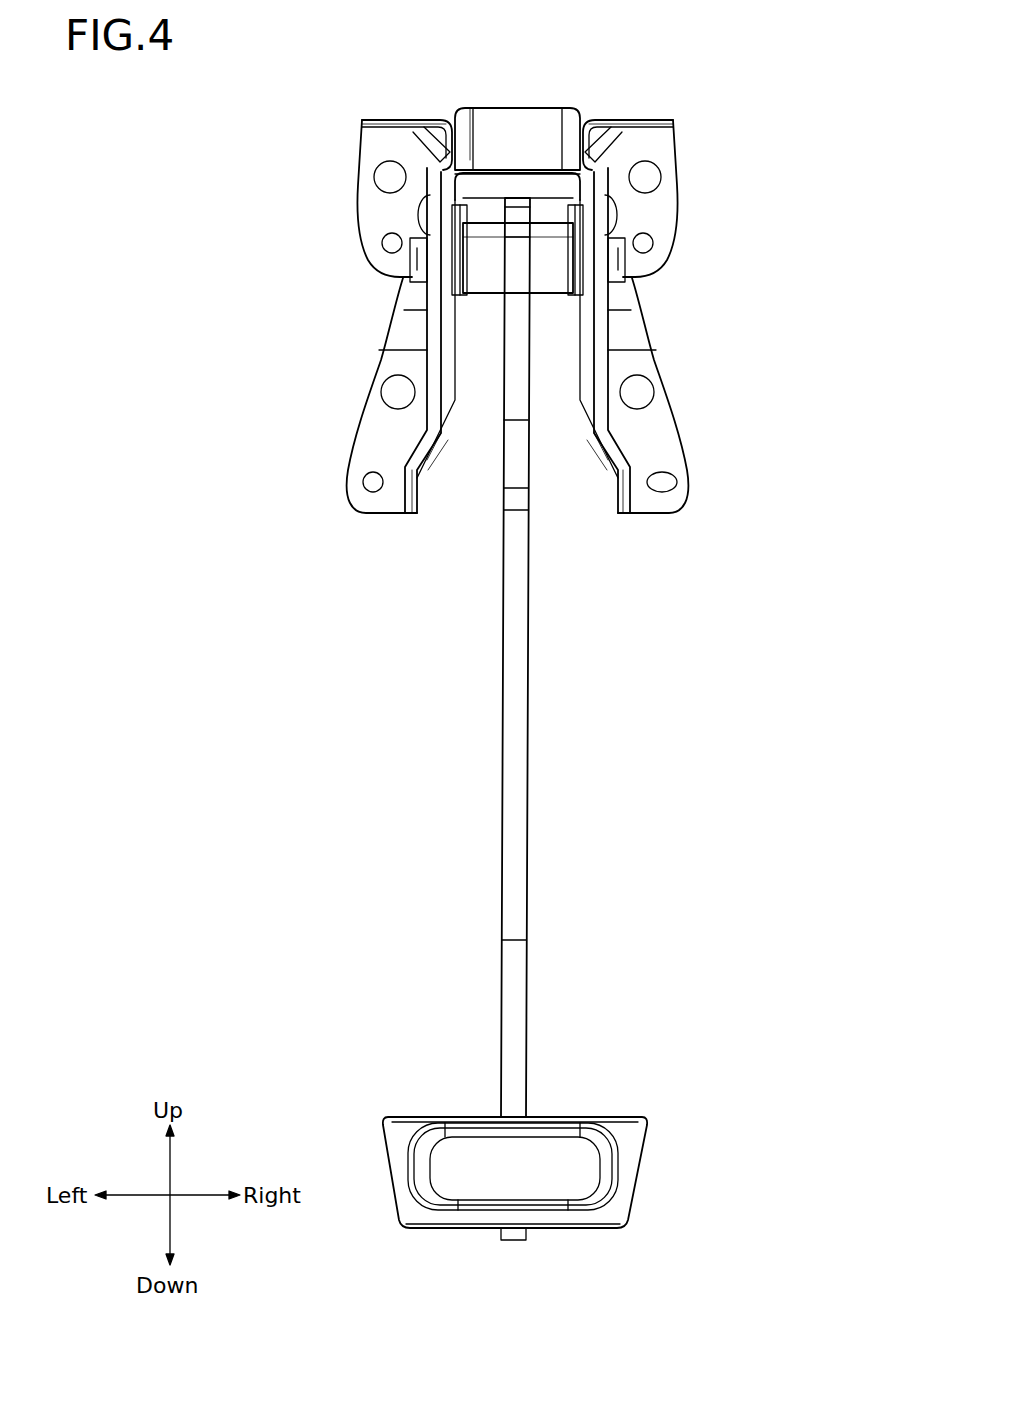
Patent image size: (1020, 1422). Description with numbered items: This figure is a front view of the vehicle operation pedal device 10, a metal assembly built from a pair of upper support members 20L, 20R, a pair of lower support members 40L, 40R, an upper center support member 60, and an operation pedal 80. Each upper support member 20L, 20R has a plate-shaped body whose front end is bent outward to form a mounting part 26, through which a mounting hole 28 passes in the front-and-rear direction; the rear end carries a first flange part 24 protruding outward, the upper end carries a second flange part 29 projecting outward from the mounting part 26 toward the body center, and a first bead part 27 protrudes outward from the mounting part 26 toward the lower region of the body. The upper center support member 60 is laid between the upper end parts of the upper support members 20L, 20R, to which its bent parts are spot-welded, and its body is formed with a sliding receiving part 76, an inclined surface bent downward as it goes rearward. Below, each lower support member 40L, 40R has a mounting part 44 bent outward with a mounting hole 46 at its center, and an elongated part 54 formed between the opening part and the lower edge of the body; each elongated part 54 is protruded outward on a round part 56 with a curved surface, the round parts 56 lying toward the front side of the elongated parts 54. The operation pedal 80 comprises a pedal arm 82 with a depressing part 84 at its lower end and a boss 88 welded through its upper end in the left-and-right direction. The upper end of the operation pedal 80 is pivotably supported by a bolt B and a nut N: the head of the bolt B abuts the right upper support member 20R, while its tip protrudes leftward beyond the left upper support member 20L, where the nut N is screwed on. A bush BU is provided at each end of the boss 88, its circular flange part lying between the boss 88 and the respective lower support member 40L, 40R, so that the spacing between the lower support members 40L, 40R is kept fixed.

The vehicle operation pedal device 10 is at (786, 64).
The upper support member 20L is at (355, 134).
The upper support member 20R is at (681, 133).
The first flange part 24 is at (420, 212).
The mounting part 26 is at (393, 143).
The first bead part 27 is at (454, 214).
The mounting hole 28 is at (384, 181).
The second flange part 29 is at (423, 128).
The lower support member 40L is at (336, 469).
The lower support member 40R is at (699, 469).
The mounting part 44 is at (385, 505).
The mounting hole 46 is at (390, 398).
The elongated part 54 is at (425, 442).
The round part 56 is at (432, 482).
The upper center support member 60 is at (543, 107).
The sliding receiving part 76 is at (502, 108).
The operation pedal 80 is at (536, 719).
The pedal arm 82 is at (515, 855).
The depressing part 84 is at (573, 1170).
The boss 88 is at (473, 282).
The bush BU is at (458, 232).
The nut N is at (410, 262).
The bolt B is at (625, 262).